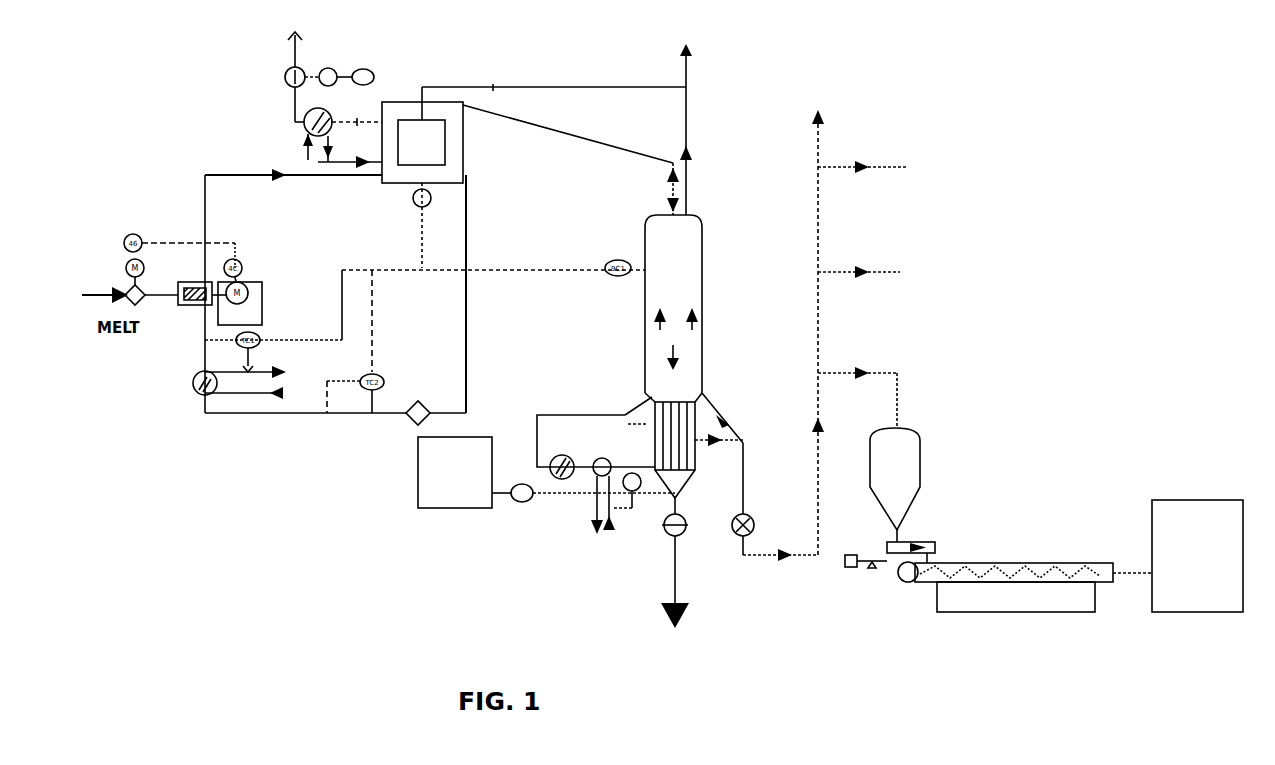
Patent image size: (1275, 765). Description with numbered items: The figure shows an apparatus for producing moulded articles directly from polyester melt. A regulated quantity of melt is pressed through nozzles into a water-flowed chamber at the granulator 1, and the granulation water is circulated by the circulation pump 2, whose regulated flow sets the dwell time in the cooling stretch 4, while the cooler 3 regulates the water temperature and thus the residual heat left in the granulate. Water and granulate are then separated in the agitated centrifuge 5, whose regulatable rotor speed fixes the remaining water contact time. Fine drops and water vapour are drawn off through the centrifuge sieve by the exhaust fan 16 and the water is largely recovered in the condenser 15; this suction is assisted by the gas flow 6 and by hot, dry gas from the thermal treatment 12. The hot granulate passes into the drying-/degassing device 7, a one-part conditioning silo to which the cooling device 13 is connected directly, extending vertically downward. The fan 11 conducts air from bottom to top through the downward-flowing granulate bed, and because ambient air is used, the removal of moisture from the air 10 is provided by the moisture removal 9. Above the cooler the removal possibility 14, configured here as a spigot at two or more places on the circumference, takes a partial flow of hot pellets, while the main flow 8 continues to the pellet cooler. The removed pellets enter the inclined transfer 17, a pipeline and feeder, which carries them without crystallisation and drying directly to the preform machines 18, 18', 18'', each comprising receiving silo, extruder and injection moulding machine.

The granulator 1 is at (202, 304).
The circulation pump 2 is at (335, 300).
The cooler 3 is at (231, 375).
The cooling stretch 4 is at (293, 281).
The agitated centrifuge 5 is at (527, 132).
The gas flow 6 is at (660, 189).
The drying-/degassing device 7 is at (673, 218).
The main flow 8 is at (683, 563).
The moisture removal 9 is at (422, 225).
The removal of moisture from the air 10 is at (455, 472).
The fan 11 is at (583, 505).
The thermal treatment 12 is at (494, 87).
The cooling device 13 is at (596, 465).
The removal possibility 14 is at (673, 436).
The condenser 15 is at (330, 138).
The exhaust fan 16 is at (317, 77).
The transfer 17 is at (756, 477).
The preform machine 18 is at (1044, 520).
The preform machine 18' is at (874, 273).
The preform machine 18'' is at (876, 168).